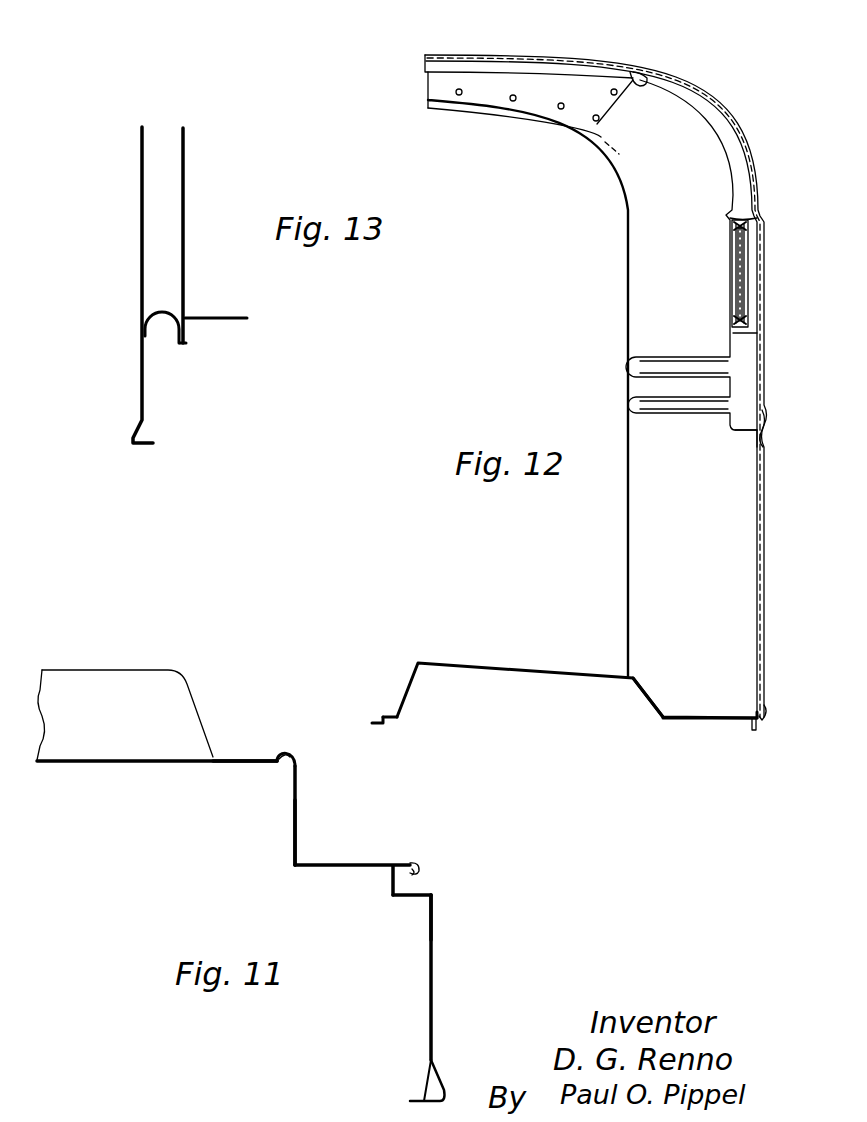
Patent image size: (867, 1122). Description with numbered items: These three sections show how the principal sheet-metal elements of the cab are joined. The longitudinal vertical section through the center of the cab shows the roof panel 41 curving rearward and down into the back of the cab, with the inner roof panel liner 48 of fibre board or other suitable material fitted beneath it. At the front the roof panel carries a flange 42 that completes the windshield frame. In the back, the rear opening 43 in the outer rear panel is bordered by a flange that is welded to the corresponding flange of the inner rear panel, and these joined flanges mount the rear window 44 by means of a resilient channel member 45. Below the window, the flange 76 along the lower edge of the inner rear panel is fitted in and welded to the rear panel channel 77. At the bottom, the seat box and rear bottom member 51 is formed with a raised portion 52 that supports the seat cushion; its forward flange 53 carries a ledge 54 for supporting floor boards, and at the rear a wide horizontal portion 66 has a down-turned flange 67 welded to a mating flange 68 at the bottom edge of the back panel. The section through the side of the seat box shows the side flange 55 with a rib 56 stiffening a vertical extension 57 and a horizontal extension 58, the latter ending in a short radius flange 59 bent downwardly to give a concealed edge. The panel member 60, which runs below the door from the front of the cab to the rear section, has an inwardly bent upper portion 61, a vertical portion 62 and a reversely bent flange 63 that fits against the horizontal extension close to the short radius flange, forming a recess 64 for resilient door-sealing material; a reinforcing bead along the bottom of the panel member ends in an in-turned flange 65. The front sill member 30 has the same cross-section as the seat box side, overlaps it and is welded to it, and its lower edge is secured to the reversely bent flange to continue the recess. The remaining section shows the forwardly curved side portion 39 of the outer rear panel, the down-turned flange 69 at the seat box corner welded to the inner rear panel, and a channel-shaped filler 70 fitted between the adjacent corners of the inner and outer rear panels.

In FIG. 11, the front sill member 30 is at (306, 813).
In FIG. 13, the forwardly curved corner or side portion 39 is at (141, 252).
In FIG. 12, the roof panel 41 is at (526, 58).
In FIG. 12, the flange 42 is at (735, 232).
In FIG. 12, the rear opening 43 is at (712, 244).
In FIG. 12, the rear window 44 is at (740, 297).
In FIG. 12, the resilient channel member 45 is at (748, 318).
In FIG. 12, the inner roof panel liner 48 is at (537, 97).
In FIG. 11, the seat box and rear bottom member 51 is at (90, 767).
In FIG. 12, the seat box and rear bottom member 51 is at (672, 722).
In FIG. 11, the raised portion 52 is at (120, 680).
In FIG. 12, the raised portion 52 is at (512, 663).
In FIG. 12, the forward flange 53 is at (387, 710).
In FIG. 12, the ledge 54 is at (372, 721).
In FIG. 11, the side flange 55 is at (248, 768).
In FIG. 11, the rib 56 is at (297, 759).
In FIG. 11, the vertical extension 57 is at (292, 818).
In FIG. 11, the horizontal extension 58 is at (338, 866).
In FIG. 11, the short radius flange 59 is at (425, 876).
In FIG. 11, the panel member 60 is at (437, 958).
In FIG. 11, the inwardly bent upper portion 61 is at (422, 900).
In FIG. 11, the vertical portion 62 is at (393, 890).
In FIG. 11, the reversely bent flange 63 is at (411, 861).
In FIG. 11, the recess 64 is at (440, 893).
In FIG. 11, the in-turned flange 65 is at (436, 1078).
In FIG. 12, the wide horizontal portion 66 is at (706, 716).
In FIG. 13, the wide horizontal portion 66 is at (250, 318).
In FIG. 12, the down-turned flange 67 is at (752, 728).
In FIG. 12, the mating flange 68 is at (763, 722).
In FIG. 13, the down-turned flange 69 is at (188, 338).
In FIG. 13, the channel-shaped filler 70 is at (178, 344).
In FIG. 12, the flange 76 is at (745, 432).
In FIG. 12, the rear panel channel 77 is at (771, 415).